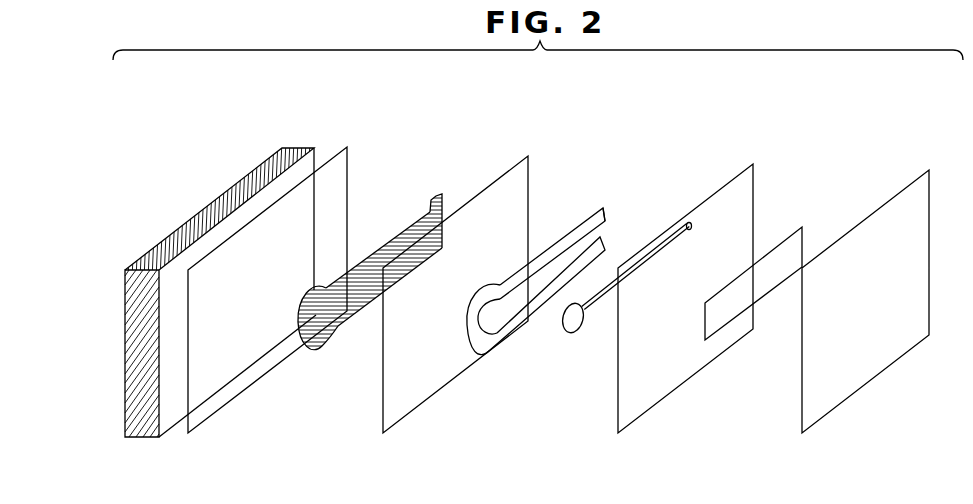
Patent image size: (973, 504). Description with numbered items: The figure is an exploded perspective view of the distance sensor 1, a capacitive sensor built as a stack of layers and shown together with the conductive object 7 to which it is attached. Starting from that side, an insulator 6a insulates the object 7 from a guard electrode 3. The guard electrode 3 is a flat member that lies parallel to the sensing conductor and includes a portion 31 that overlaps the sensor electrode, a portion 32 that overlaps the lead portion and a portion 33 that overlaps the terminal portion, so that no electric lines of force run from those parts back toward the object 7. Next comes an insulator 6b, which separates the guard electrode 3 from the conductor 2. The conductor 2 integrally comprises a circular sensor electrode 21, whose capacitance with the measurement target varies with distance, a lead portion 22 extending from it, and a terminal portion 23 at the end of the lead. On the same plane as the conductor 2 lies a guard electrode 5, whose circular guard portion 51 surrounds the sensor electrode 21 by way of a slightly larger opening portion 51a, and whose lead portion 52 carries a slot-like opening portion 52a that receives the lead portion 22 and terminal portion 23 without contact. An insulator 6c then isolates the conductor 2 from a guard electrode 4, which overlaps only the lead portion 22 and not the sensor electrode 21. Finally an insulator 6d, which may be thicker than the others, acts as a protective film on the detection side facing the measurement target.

The distance sensor 1 is at (543, 260).
The conductor 2 is at (616, 290).
The guard electrode 3 is at (366, 281).
The guard electrode 4 is at (803, 222).
The guard electrode 5 is at (541, 276).
The insulator 6a is at (347, 148).
The insulator 6b is at (528, 157).
The insulator 6c is at (753, 164).
The insulator 6d is at (929, 170).
The object 7 is at (276, 157).
The sensor electrode 21 is at (580, 333).
The lead portion 22 is at (597, 301).
The terminal portion 23 is at (688, 222).
The portion 31 is at (316, 350).
The portion 32 is at (389, 242).
The portion 33 is at (437, 194).
The guard portion 51 is at (481, 356).
The opening portion 51a is at (495, 342).
The lead portion 52 is at (562, 240).
The opening portion 52a is at (578, 241).